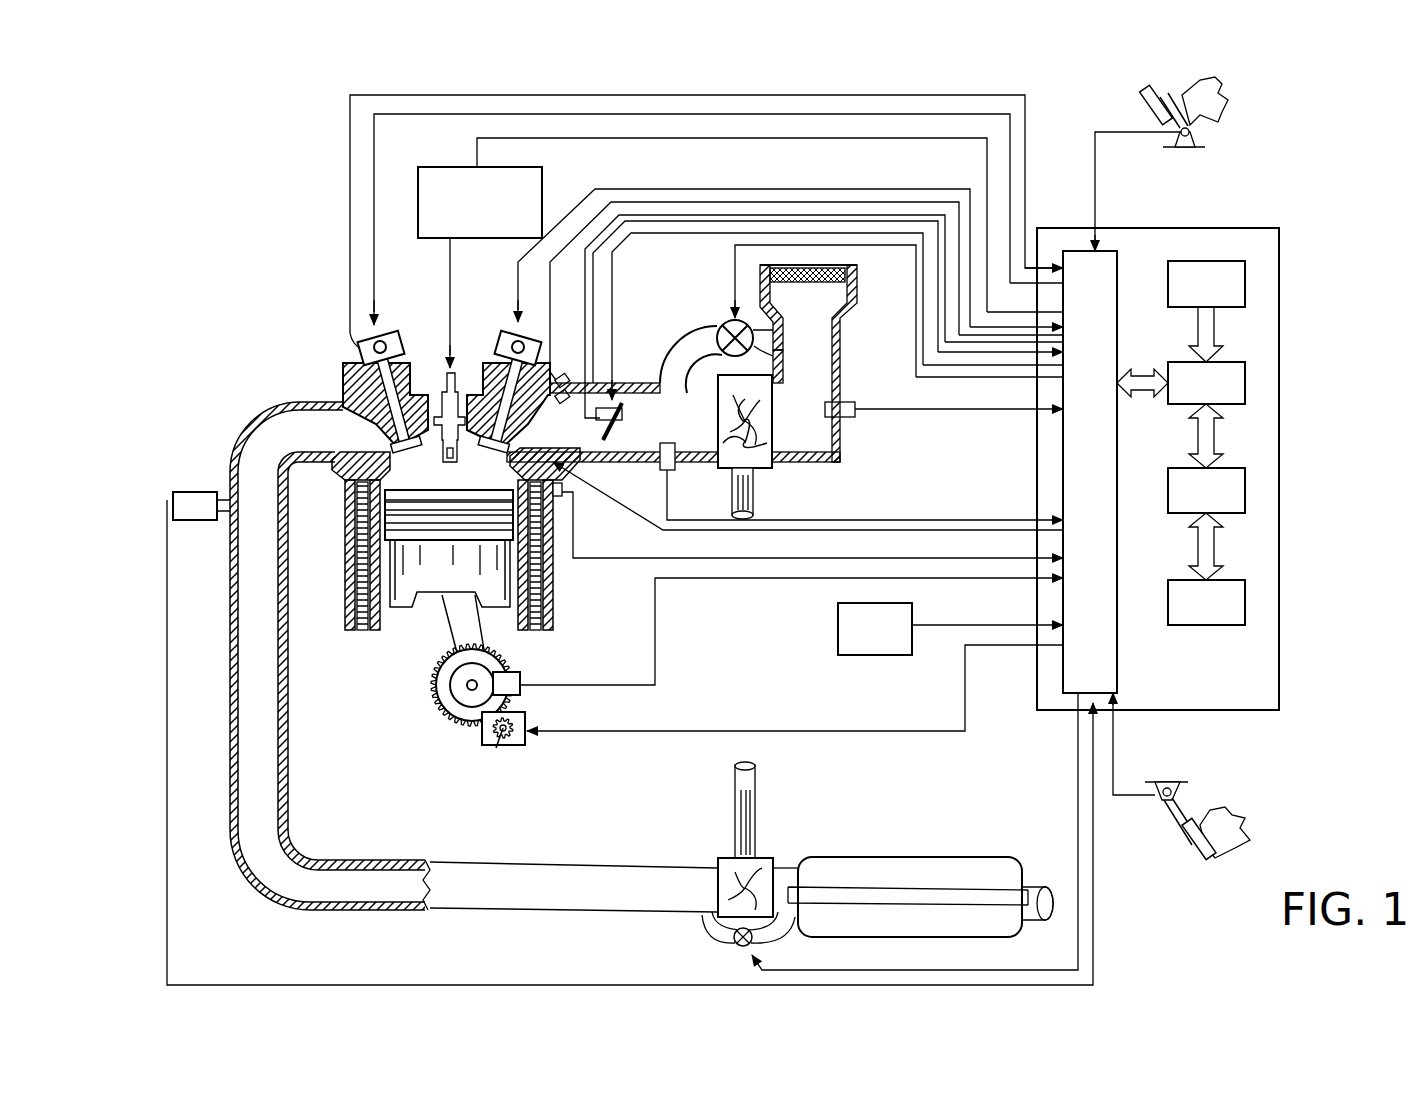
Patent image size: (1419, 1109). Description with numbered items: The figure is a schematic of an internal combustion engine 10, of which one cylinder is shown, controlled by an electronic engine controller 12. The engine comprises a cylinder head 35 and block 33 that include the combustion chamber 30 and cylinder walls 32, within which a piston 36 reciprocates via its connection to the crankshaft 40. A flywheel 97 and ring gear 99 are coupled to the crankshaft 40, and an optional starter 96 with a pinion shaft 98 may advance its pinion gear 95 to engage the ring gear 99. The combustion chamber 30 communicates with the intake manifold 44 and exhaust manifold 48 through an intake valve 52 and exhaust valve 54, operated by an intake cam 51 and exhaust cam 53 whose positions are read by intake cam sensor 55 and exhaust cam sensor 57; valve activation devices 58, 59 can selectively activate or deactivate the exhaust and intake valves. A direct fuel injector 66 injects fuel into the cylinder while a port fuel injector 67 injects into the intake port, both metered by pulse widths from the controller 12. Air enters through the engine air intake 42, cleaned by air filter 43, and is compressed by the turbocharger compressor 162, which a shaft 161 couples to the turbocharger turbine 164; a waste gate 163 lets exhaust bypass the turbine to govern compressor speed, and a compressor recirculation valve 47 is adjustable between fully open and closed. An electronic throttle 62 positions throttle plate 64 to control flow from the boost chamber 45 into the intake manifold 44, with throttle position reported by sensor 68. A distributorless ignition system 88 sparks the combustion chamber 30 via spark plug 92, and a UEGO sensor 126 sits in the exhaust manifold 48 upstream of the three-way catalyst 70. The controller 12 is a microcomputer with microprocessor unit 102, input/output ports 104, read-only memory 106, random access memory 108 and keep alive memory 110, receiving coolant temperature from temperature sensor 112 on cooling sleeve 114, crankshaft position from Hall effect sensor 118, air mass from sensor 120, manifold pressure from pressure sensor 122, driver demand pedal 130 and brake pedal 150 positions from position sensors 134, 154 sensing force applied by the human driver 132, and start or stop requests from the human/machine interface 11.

The internal combustion engine 10 is at (275, 318).
The human/machine interface 11 is at (950, 629).
The electronic engine controller 12 is at (1270, 228).
The combustion chamber 30 is at (382, 535).
The cylinder walls 32 is at (392, 618).
The block 33 is at (345, 517).
The cylinder head 35 is at (343, 360).
The piston 36 is at (432, 585).
The crankshaft 40 is at (456, 712).
The engine air intake 42 is at (678, 290).
The air filter 43 is at (818, 283).
The intake manifold 44 is at (558, 436).
The boost chamber 45 is at (665, 436).
The compressor recirculation valve 47 is at (722, 325).
The exhaust manifold 48 is at (298, 444).
The intake cam 51 is at (515, 335).
The intake valve 52 is at (505, 443).
The exhaust cam 53 is at (380, 336).
The exhaust valve 54 is at (395, 437).
The intake cam sensor 55 is at (535, 346).
The exhaust cam sensor 57 is at (362, 345).
The valve activation device 58 is at (388, 348).
The valve activation device 59 is at (510, 350).
The electronic throttle 62 is at (622, 412).
The throttle plate 64 is at (622, 430).
The direct fuel injector 66 is at (563, 496).
The port fuel injector 67 is at (562, 376).
The throttle position sensor 68 is at (614, 400).
The three-way catalyst 70 is at (842, 857).
The distributorless ignition system 88 is at (544, 174).
The spark plug 92 is at (455, 372).
The pinion gear 95 is at (505, 740).
The starter 96 is at (526, 744).
The flywheel 97 is at (445, 695).
The pinion shaft 98 is at (494, 745).
The ring gear 99 is at (468, 722).
The microprocessor unit 102 is at (1245, 385).
The input/output ports 104 is at (1118, 262).
The read-only memory 106 is at (1245, 280).
The random access memory 108 is at (1245, 490).
The keep alive memory 110 is at (1245, 602).
The temperature sensor 112 is at (812, 525).
The cooling sleeve 114 is at (548, 583).
The Hall effect sensor 118 is at (522, 674).
The air mass sensor 120 is at (855, 403).
The pressure sensor 122 is at (660, 462).
The Universal Exhaust Gas Oxygen sensor 126 is at (167, 500).
The driver demand pedal 130 is at (1162, 108).
The human driver 132 is at (1228, 100).
The position sensor 134 is at (1200, 132).
The brake pedal 150 is at (1188, 845).
The position sensor 154 is at (1152, 792).
The shaft 161 is at (732, 490).
The turbocharger compressor 162 is at (760, 465).
The waste gate 163 is at (735, 945).
The turbocharger turbine 164 is at (722, 858).